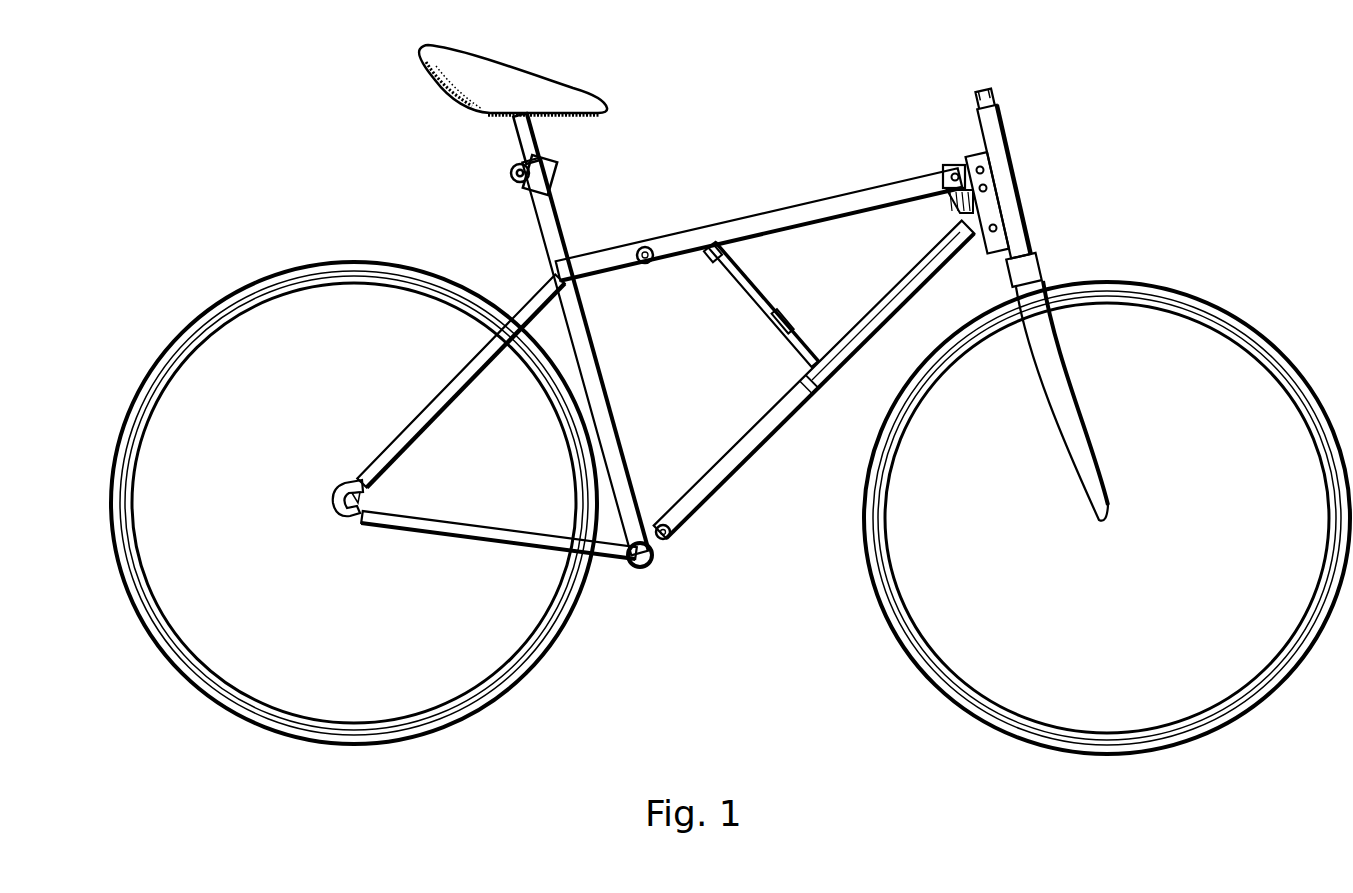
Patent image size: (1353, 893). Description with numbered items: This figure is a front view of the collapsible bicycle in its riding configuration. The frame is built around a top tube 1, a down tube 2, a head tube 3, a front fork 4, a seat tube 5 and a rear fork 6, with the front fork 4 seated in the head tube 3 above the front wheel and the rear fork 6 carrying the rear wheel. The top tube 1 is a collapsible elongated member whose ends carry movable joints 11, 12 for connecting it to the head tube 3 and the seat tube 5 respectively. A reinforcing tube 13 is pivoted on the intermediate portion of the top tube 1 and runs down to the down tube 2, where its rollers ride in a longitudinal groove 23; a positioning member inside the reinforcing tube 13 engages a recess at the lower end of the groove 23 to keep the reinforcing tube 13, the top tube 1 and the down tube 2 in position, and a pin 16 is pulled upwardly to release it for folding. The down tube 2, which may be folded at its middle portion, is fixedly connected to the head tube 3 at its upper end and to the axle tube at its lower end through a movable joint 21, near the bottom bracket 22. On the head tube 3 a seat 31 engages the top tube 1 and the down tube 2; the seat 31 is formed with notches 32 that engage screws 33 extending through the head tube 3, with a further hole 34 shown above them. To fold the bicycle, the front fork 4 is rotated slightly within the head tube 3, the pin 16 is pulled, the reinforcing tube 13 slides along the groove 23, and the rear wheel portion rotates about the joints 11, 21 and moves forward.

The top tube 1 is at (797, 205).
The down tube 2 is at (860, 316).
The head tube 3 is at (992, 217).
The front fork 4 is at (1056, 393).
The seat tube 5 is at (603, 373).
The rear fork 6 is at (438, 392).
The movable joint 11 is at (642, 243).
The movable joint 12 is at (953, 172).
The reinforcing tube 13 is at (747, 287).
The pin 16 is at (782, 332).
The movable joint 21 is at (668, 535).
The bottom bracket 22 is at (640, 568).
The longitudinal groove 23 is at (897, 272).
The seat 31 is at (1023, 215).
The notches 32 is at (960, 212).
The screws 33 is at (990, 188).
The hole 34 is at (985, 167).